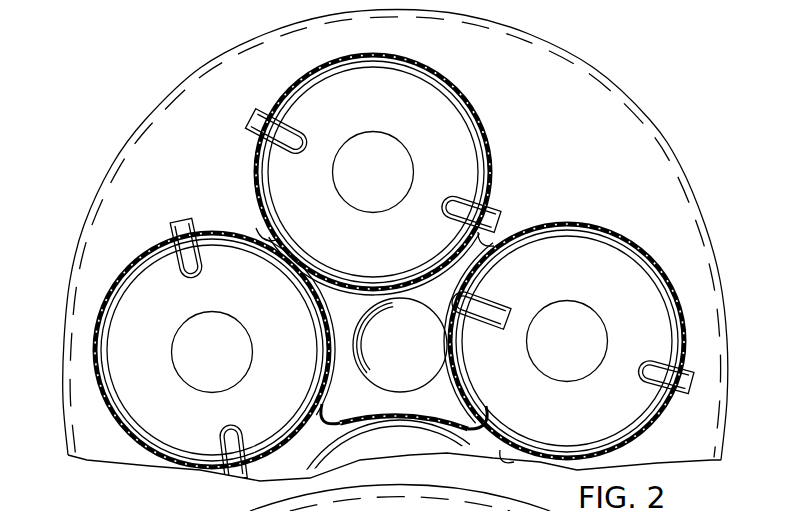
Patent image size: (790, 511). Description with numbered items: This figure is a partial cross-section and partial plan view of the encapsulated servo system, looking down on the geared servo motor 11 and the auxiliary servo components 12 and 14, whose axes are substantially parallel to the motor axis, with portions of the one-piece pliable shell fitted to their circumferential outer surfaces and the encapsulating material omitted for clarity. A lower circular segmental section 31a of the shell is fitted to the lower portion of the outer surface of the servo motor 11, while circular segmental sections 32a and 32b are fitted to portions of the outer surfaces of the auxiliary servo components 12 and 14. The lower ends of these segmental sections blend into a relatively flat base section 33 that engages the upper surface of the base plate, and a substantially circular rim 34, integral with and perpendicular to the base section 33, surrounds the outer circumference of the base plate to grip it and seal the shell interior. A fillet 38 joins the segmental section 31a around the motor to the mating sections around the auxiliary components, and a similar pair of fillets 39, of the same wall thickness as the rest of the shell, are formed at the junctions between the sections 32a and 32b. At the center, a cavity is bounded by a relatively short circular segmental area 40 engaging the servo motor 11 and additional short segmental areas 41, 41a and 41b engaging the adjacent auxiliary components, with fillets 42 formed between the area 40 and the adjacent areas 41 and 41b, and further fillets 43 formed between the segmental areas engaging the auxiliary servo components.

The geared servo motor 11 is at (160, 428).
The auxiliary servo component 12 is at (413, 92).
The auxiliary servo component 14 is at (637, 283).
The lower circular segmental section 31a is at (100, 308).
The circular segmental section 32a is at (478, 119).
The circular segmental section 32b is at (626, 246).
The base section 33 is at (577, 97).
The circular rim 34 is at (650, 135).
The fillet 38 is at (266, 237).
The fillets 39 is at (482, 242).
The circular segmental area 40 is at (327, 349).
The circular segmental area 41 is at (413, 290).
The circular segmental area 41a is at (452, 367).
The circular segmental area 41b is at (410, 412).
The fillets 42 is at (325, 417).
The fillets 43 is at (472, 410).